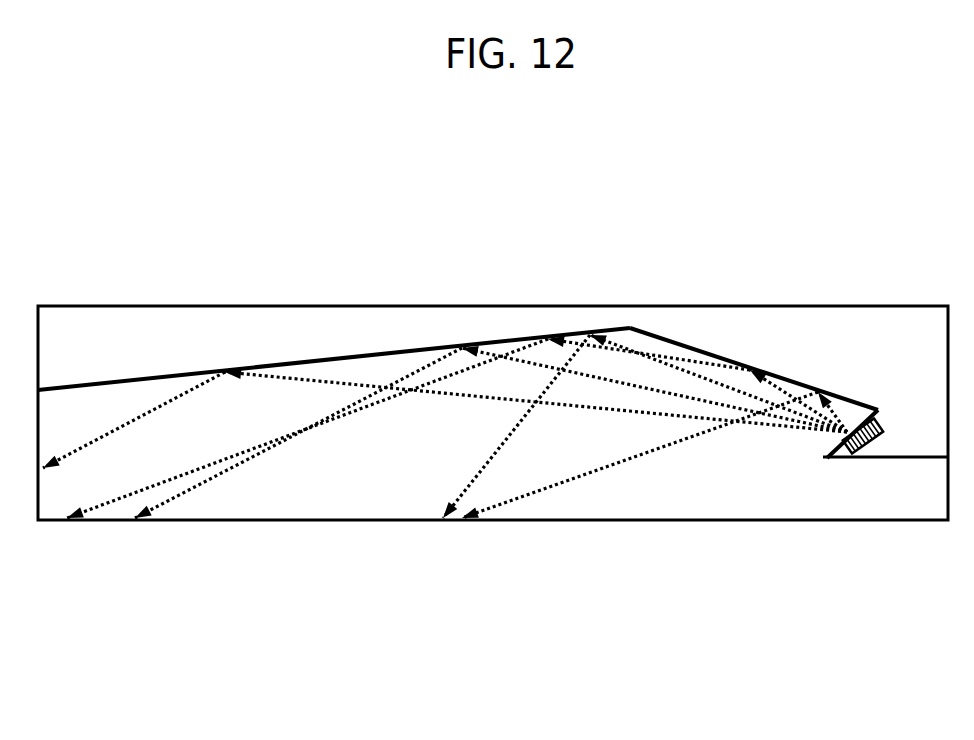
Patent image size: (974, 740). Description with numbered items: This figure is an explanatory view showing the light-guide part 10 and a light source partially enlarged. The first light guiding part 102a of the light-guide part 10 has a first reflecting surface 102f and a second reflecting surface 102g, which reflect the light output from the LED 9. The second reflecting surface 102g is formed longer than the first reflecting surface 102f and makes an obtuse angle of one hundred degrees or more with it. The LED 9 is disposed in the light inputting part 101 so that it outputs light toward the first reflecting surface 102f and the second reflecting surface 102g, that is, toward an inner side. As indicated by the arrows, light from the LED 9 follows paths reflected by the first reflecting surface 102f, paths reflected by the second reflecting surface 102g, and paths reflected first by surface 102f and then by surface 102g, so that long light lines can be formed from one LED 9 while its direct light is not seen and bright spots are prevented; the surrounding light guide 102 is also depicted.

The light-guide part 10 is at (253, 515).
The LED 9 is at (853, 456).
The light inputting part 101 is at (866, 415).
The light guide plate 102 is at (922, 500).
The first light guiding part 102a is at (115, 405).
The first reflecting surface 102f is at (668, 338).
The second reflecting surface 102g is at (367, 347).